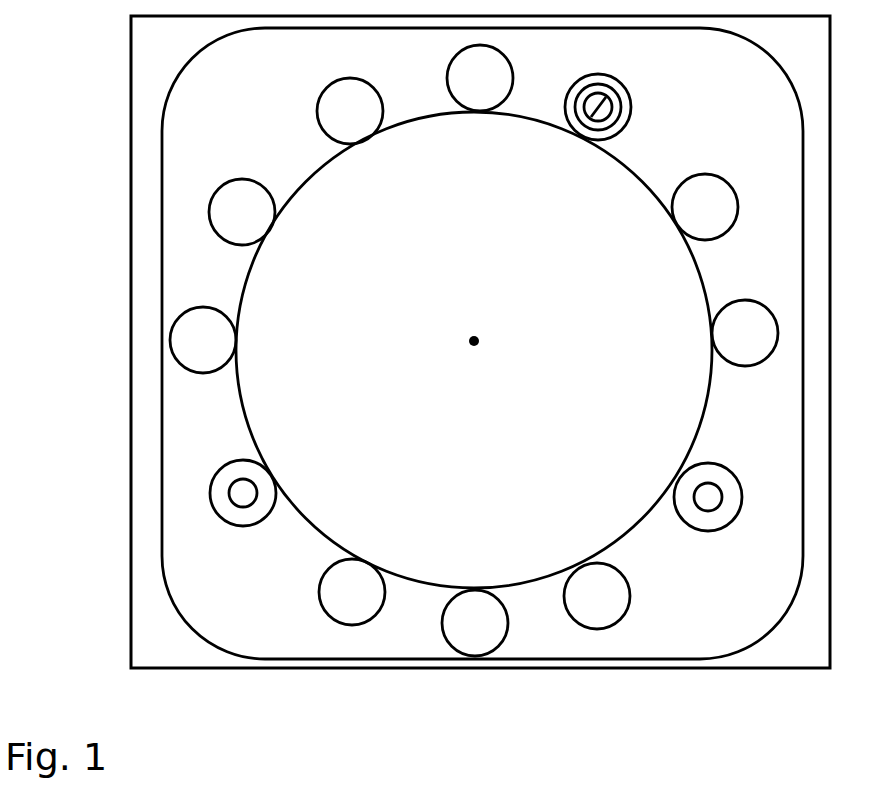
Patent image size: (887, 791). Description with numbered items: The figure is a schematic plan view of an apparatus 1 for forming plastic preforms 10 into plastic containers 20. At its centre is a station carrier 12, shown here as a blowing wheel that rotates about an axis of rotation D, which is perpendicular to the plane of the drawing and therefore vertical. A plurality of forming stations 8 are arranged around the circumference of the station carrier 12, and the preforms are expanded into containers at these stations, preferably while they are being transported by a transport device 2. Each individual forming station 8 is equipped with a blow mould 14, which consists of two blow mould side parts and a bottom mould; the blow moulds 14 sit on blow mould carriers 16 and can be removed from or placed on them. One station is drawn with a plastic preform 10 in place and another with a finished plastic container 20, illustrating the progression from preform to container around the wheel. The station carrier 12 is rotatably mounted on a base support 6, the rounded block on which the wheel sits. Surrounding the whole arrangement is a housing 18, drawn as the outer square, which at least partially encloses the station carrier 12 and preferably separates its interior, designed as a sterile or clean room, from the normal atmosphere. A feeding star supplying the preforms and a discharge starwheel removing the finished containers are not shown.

The apparatus 1 is at (110, 263).
The transport device 2 is at (192, 255).
The base support 6 is at (238, 566).
The forming station 8 is at (715, 193).
The plastic preform 10 is at (713, 500).
The station carrier 12 is at (680, 345).
The blow mould 14 is at (610, 113).
The blow mould carrier 16 is at (623, 90).
The housing 18 is at (131, 543).
The plastic container 20 is at (248, 493).